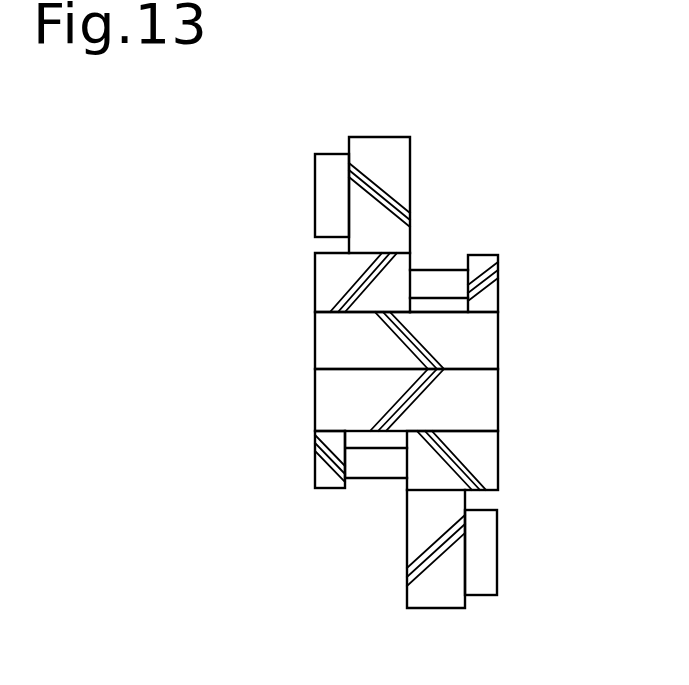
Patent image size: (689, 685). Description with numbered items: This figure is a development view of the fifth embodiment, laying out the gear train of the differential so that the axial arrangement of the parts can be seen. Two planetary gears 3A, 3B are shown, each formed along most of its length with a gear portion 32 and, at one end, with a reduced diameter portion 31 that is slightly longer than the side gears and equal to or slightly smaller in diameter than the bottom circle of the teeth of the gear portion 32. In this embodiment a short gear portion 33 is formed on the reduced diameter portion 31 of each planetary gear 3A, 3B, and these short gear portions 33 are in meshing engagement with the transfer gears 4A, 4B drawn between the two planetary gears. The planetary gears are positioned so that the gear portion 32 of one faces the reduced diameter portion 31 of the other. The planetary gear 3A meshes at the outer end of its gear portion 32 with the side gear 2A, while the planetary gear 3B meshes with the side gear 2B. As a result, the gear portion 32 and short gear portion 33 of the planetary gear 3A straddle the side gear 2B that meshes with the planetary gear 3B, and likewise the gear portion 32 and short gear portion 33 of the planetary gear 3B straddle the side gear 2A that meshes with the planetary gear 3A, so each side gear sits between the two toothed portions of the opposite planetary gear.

The side gear 2A is at (433, 608).
The side gear 2B is at (380, 137).
The planetary gear 3A is at (498, 453).
The planetary gear 3B is at (325, 269).
The transfer gear 4A is at (315, 397).
The transfer gear 4B is at (315, 345).
The reduced diameter portion 31 is at (435, 270).
The gear portion 32 is at (325, 290).
The short gear portion 33 is at (482, 255).